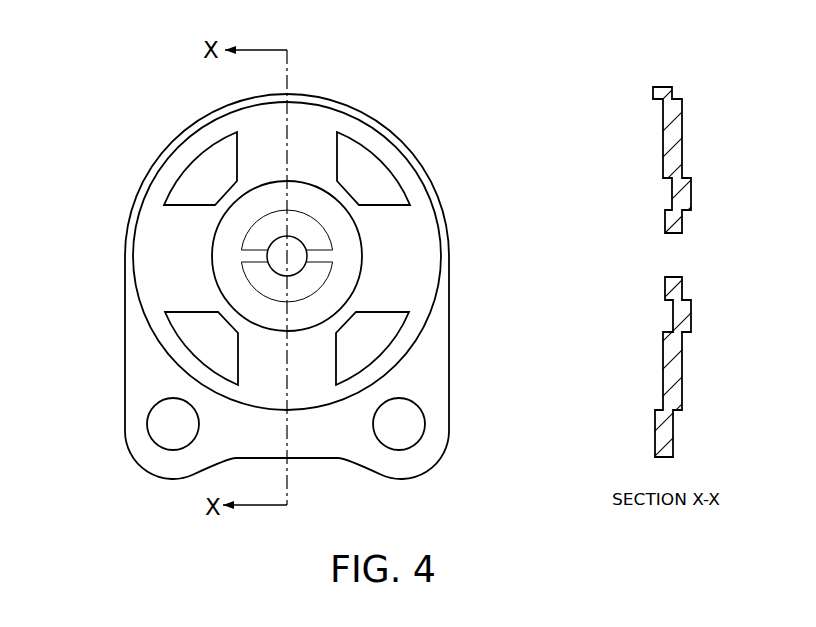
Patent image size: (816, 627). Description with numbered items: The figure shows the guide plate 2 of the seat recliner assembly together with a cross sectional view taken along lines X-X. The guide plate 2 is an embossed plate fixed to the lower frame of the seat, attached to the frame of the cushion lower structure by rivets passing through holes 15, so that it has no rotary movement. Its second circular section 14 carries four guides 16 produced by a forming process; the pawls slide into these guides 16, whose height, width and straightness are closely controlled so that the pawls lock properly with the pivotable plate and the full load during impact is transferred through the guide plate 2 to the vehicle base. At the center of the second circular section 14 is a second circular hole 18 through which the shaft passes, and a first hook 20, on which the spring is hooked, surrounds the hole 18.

The guide plate 2 is at (413, 172).
The second circular section 14 is at (397, 221).
The holes 15 is at (148, 433).
The guides 16 is at (313, 388).
The second circular hole 18 is at (293, 275).
The first hook 20 is at (307, 303).